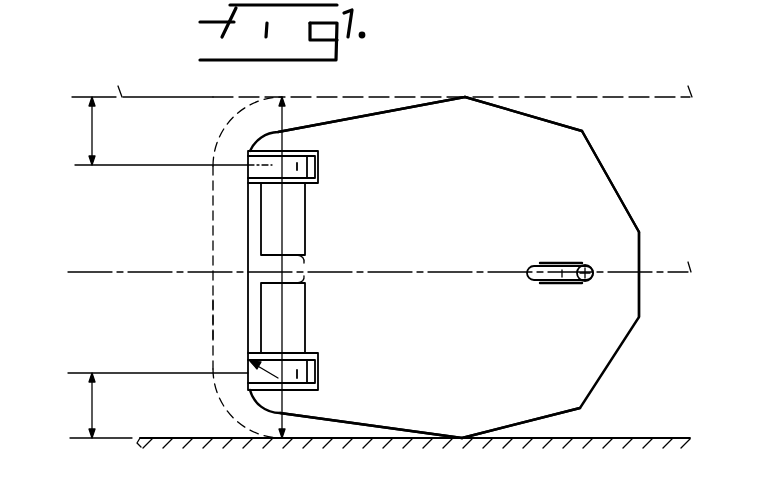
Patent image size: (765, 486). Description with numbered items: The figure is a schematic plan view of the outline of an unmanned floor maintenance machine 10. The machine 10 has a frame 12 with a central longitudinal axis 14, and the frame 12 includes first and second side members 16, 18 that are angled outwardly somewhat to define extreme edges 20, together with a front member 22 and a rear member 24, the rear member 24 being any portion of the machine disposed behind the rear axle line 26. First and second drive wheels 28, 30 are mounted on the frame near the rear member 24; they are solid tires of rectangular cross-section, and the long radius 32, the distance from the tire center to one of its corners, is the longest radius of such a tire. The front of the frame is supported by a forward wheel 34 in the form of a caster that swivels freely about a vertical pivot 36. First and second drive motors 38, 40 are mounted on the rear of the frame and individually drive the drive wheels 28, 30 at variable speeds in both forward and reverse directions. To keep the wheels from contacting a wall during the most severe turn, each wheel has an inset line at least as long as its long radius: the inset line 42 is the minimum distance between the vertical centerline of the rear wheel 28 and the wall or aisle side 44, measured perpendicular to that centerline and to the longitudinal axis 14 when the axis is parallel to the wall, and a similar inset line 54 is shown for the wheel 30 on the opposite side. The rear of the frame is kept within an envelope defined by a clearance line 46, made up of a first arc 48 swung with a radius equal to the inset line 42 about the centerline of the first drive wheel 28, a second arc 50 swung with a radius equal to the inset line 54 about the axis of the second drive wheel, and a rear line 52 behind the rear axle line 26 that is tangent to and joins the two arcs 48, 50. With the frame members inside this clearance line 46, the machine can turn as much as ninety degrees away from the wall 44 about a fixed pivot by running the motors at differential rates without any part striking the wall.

The floor maintenance machine 10 is at (622, 150).
The frame 12 is at (630, 189).
The central longitudinal axis 14 is at (662, 272).
The first side member 16 is at (539, 420).
The second side member 18 is at (539, 118).
The extreme edges 20 is at (467, 97).
The front member 22 is at (641, 303).
The rear member 24 is at (247, 295).
The rear axle line 26 is at (282, 229).
The first drive wheel 28 is at (320, 380).
The second drive wheel 30 is at (320, 168).
The long radius 32 is at (262, 371).
The forward wheel 34 is at (530, 278).
The vertical pivot 36 is at (588, 266).
The first drive motor 38 is at (305, 285).
The second drive motor 40 is at (303, 259).
The inset line 42 is at (158, 405).
The wall 44 is at (641, 438).
The clearance line 46 is at (203, 216).
The first arc 48 is at (221, 404).
The second arc 50 is at (226, 122).
The rear line 52 is at (213, 337).
The inset line 54 is at (382, 125).